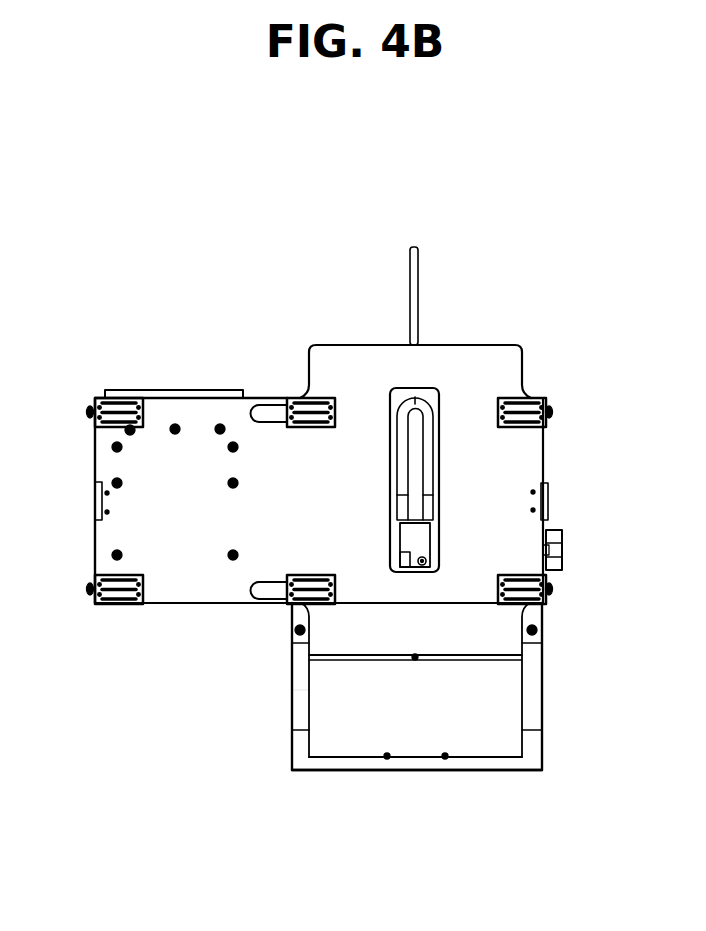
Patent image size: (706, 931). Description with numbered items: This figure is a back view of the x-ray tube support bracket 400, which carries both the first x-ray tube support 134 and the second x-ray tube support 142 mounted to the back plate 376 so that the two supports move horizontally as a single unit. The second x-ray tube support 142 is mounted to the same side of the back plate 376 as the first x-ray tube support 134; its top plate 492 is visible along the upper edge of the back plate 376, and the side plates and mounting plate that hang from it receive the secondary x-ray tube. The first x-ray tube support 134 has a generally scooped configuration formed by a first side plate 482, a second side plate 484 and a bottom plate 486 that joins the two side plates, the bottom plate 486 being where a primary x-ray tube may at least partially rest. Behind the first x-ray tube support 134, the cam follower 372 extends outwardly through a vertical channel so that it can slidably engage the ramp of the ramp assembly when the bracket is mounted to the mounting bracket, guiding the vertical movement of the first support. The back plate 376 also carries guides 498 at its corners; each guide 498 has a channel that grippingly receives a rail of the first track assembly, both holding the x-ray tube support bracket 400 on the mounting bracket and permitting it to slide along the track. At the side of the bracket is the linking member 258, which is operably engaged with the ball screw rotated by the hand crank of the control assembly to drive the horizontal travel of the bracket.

The x-ray tube support bracket 400 is at (508, 283).
The second x-ray tube support 142 is at (181, 392).
The back plate 376 is at (192, 573).
The top plate 492 is at (140, 390).
The guides 498 is at (88, 412).
The cam follower 372 is at (417, 537).
The linking member 258 is at (562, 550).
The first side plate 482 is at (543, 684).
The second side plate 484 is at (299, 697).
The bottom plate 486 is at (352, 763).
The first x-ray tube support 134 is at (443, 771).